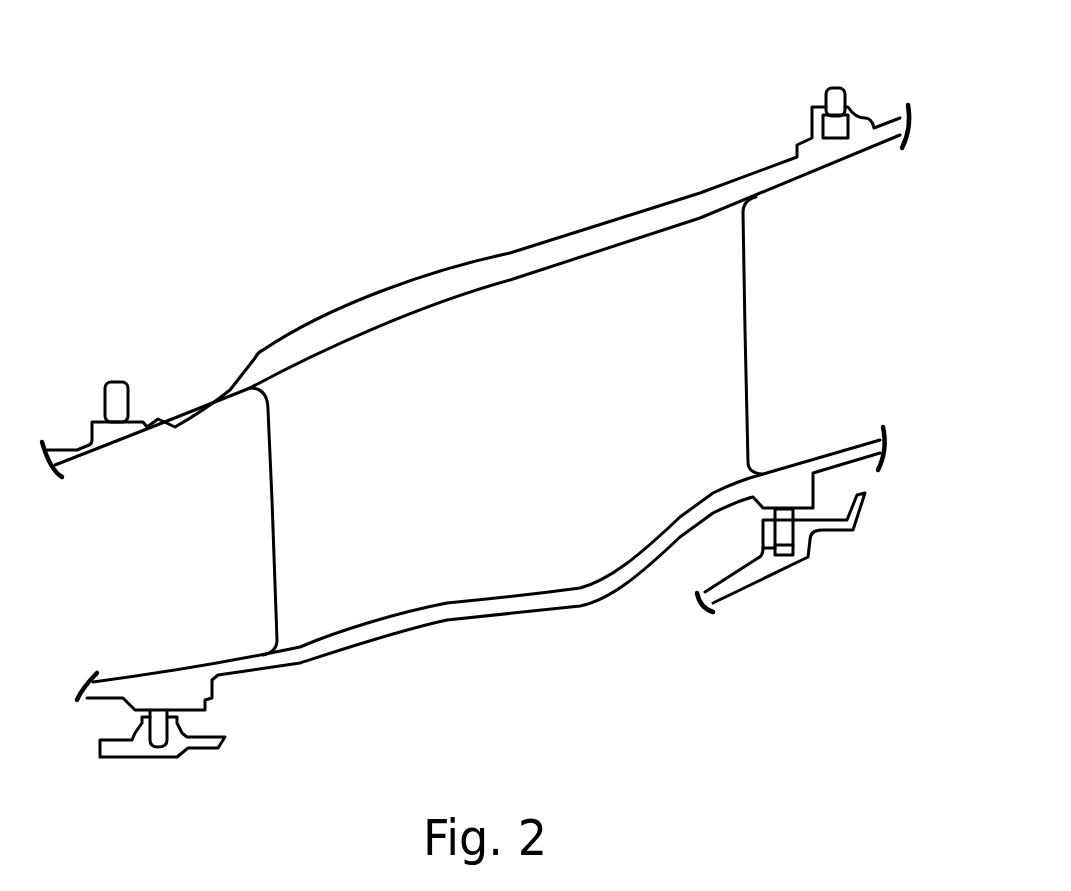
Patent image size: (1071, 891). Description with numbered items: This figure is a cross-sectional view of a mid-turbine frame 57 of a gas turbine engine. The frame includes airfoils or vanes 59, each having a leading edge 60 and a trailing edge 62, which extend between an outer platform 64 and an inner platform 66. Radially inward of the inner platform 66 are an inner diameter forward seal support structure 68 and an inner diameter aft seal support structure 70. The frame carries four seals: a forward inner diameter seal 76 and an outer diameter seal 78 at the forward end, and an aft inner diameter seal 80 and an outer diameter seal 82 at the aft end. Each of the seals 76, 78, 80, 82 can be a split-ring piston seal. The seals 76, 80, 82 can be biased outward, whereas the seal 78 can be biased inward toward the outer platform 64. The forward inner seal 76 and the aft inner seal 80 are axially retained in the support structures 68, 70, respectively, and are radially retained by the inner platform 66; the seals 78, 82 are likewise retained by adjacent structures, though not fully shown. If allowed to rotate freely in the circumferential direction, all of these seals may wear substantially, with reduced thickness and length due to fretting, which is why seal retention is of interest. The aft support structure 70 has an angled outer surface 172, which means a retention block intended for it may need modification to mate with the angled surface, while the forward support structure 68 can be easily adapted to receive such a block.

The mid-turbine frame 57 is at (515, 160).
The airfoils/vanes 59 is at (517, 444).
The leading edge 60 is at (272, 528).
The trailing edge 62 is at (747, 358).
The outer platform 64 is at (765, 192).
The inner platform 66 is at (158, 672).
The inner diameter forward seal support structure 68 is at (202, 752).
The inner diameter aft seal support structure 70 is at (780, 580).
The forward inner diameter seal 76 is at (158, 725).
The outer diameter seal 78 is at (113, 400).
The aft inner diameter seal 80 is at (763, 533).
The aft outer diameter seal 82 is at (835, 87).
The angled outer surface 172 is at (727, 585).